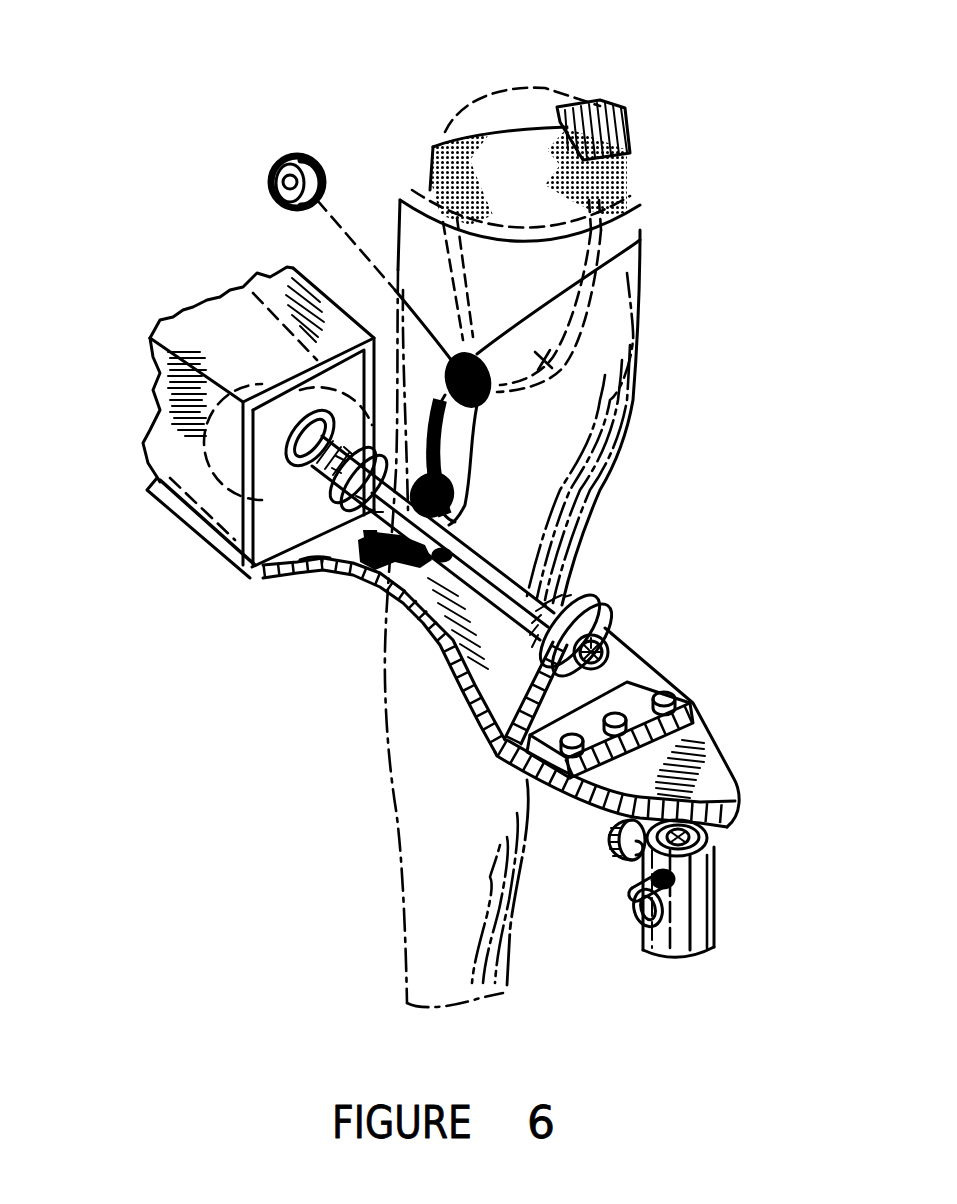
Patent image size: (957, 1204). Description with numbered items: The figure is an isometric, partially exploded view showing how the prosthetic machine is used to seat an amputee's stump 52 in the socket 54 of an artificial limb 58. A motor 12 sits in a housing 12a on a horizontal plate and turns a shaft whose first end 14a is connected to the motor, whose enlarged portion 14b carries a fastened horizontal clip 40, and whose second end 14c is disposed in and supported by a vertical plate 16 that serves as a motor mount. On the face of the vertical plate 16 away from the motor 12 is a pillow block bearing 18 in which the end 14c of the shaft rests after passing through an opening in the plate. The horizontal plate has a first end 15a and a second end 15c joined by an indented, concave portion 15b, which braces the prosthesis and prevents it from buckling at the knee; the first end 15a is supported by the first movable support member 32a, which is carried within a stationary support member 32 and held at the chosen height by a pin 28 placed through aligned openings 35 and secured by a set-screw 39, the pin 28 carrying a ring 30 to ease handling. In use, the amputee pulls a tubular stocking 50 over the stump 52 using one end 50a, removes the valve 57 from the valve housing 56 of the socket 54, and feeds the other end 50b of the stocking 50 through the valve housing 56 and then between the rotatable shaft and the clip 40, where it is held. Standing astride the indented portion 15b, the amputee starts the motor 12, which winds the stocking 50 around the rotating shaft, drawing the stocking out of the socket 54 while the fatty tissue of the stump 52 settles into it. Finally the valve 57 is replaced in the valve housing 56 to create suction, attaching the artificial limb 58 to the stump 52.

The motor 12 is at (235, 470).
The housing 12a is at (218, 320).
The first end 14a is at (300, 488).
The enlarged portion 14b is at (240, 548).
The second end 14c is at (500, 574).
The first end 15a is at (497, 752).
The indented portion 15b is at (395, 603).
The second end 15c is at (267, 575).
The vertical plate 16 is at (593, 617).
The pillow block bearing 18 is at (625, 630).
The pin 28 is at (633, 885).
The ring 30 is at (635, 915).
The tube 32 is at (717, 913).
The first movable support member 32a is at (717, 853).
The opening 35 is at (708, 832).
The set-screw 39 is at (617, 862).
The horizontal clip 40 is at (317, 575).
The tubular stocking 50 is at (460, 470).
The one end of the stocking 50a is at (520, 135).
The other end of the stocking 50b is at (350, 572).
The stump 52 is at (593, 118).
The socket 54 is at (640, 312).
The valve housing 56 is at (640, 240).
The valve 57 is at (285, 152).
The artificial limb 58 is at (417, 887).